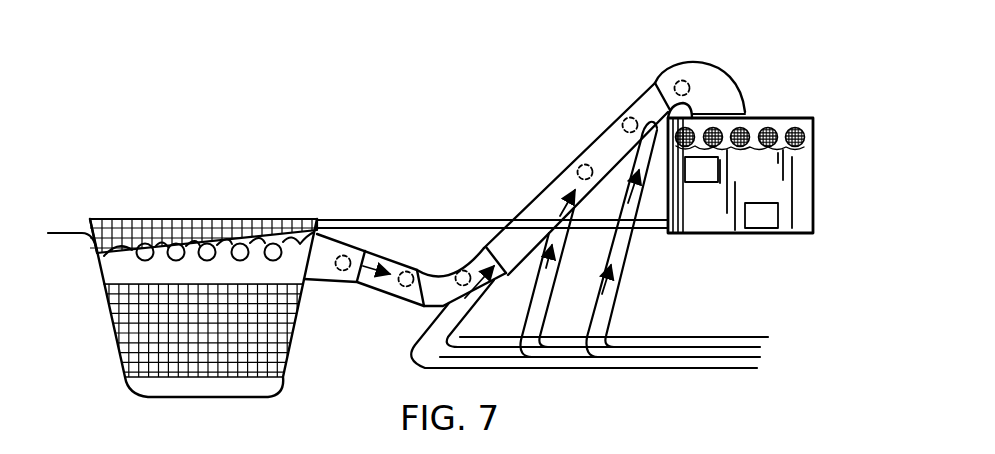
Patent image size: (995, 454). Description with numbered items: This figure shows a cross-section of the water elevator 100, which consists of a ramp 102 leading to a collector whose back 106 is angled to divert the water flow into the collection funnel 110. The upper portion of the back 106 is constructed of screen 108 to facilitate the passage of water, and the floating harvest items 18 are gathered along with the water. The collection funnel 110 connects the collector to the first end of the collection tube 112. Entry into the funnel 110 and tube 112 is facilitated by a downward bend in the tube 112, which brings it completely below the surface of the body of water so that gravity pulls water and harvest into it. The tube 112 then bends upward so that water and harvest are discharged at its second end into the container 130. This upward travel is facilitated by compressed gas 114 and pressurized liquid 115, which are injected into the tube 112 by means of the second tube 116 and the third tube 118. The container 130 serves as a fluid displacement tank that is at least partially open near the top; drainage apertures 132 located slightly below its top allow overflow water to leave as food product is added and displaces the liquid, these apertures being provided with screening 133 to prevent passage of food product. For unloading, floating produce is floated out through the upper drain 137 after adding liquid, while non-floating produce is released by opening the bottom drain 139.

The ball 18 is at (272, 246).
The water elevator 100 is at (564, 108).
The ramp 102 is at (117, 330).
The back 106 is at (110, 266).
The screen 108 is at (125, 232).
The collection funnel 110 is at (344, 256).
The collection tube 112 is at (534, 204).
The compressed gas 114 is at (772, 341).
The pressurized liquid 115 is at (764, 363).
The second tube 116 is at (653, 366).
The third tube 118 is at (688, 341).
The container 130 is at (775, 123).
The drainage apertures 132 is at (357, 222).
The screening 133 is at (806, 142).
The upper drain 137 is at (710, 173).
The bottom drain 139 is at (779, 213).